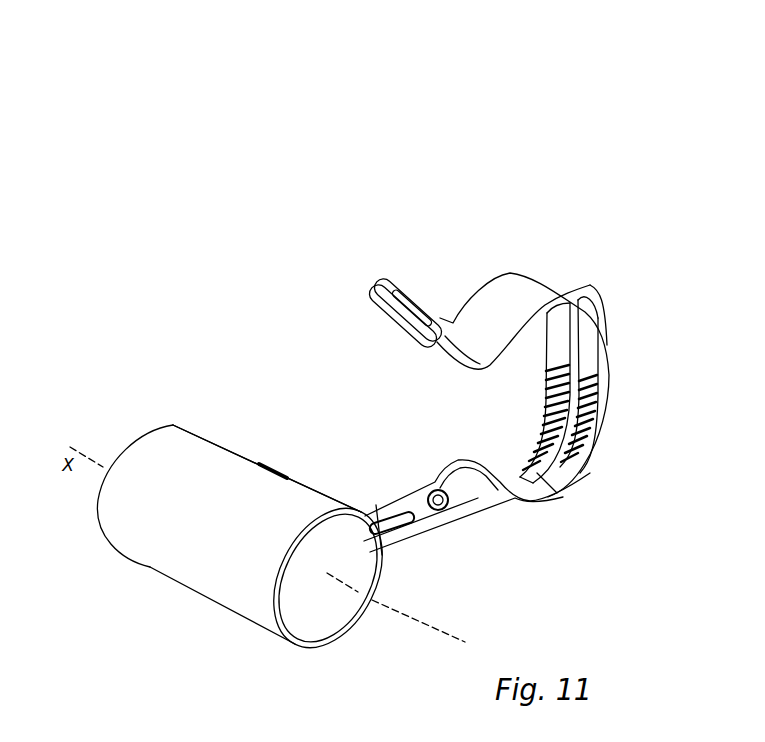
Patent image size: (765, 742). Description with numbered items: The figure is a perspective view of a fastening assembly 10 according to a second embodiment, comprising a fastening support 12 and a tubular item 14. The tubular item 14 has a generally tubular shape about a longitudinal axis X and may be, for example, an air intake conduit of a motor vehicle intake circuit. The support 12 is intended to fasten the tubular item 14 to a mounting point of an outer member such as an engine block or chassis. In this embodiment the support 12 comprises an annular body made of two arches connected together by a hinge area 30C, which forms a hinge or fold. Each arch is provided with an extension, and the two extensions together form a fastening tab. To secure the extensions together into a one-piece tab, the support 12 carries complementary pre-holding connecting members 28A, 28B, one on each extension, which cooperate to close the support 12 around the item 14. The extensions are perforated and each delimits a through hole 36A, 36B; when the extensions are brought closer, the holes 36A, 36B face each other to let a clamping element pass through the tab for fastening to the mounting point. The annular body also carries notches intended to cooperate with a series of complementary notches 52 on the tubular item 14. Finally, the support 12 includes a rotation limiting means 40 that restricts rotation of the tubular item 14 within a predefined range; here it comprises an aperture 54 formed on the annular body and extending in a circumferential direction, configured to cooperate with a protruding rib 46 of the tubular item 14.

The fastening assembly 10 is at (395, 124).
The fastening support 12 is at (507, 292).
The tubular item 14 is at (173, 445).
The pre-holding connecting member 28A is at (443, 340).
The pre-holding connecting member 28B is at (445, 513).
The hinge area 30C is at (605, 333).
The through hole 36A is at (400, 278).
The through hole 36B is at (400, 503).
The rotation limiting means 40 is at (578, 300).
The protruding rib 46 is at (278, 460).
The complementary notches 52 is at (540, 423).
The aperture 54 is at (563, 497).